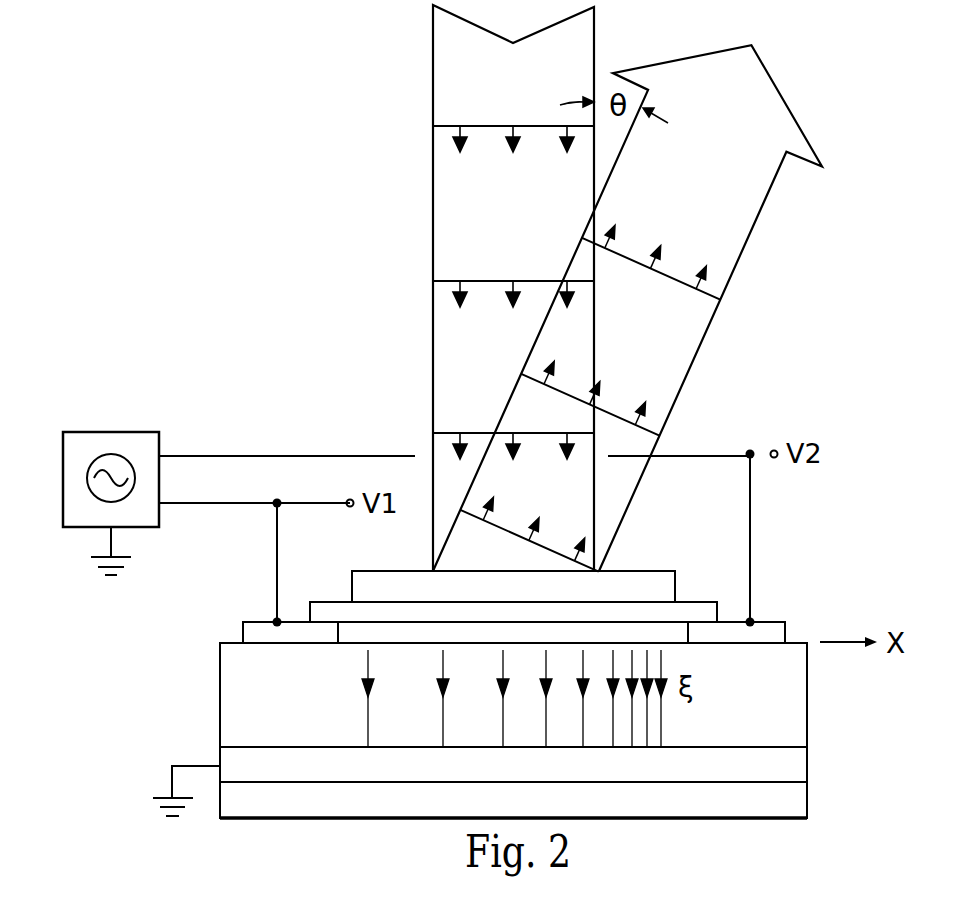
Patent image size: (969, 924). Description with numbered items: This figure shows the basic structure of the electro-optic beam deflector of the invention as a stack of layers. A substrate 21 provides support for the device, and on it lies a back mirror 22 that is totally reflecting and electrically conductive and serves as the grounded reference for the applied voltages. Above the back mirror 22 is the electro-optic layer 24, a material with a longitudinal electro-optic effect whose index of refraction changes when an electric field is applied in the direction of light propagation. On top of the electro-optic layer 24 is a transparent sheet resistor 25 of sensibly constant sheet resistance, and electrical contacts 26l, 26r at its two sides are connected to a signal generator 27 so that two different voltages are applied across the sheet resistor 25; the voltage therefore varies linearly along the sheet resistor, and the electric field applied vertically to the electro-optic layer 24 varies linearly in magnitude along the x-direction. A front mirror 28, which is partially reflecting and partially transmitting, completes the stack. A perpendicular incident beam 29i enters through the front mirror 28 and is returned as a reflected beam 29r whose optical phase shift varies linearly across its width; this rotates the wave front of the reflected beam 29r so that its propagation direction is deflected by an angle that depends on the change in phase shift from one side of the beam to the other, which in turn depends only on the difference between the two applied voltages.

The perpendicular incident beam 29i is at (432, 116).
The phase-shifted reflected beam 29r is at (740, 258).
The front partially reflecting and partially transmitting mirror 28 is at (620, 575).
The transparent sheet resistor 25 is at (680, 608).
The electrical contact 26l is at (273, 632).
The electrical contact 26r is at (768, 628).
The electro-optic layer 24 is at (792, 707).
The back mirror 22 is at (792, 776).
The substrate 21 is at (792, 810).
The signal generator 27 is at (154, 443).